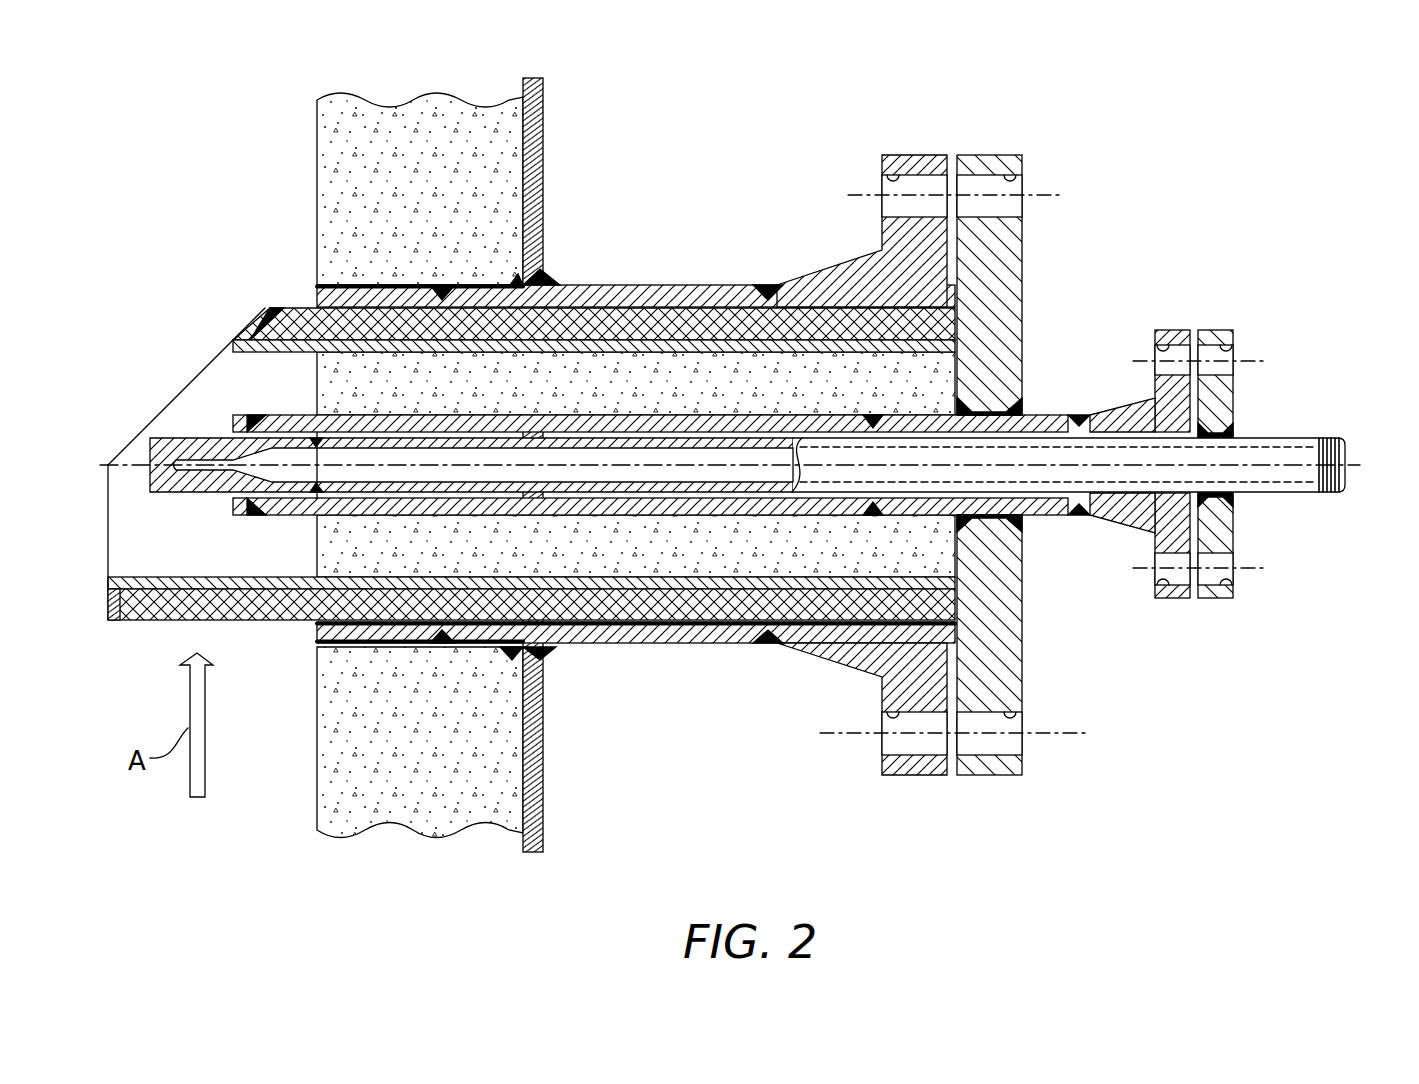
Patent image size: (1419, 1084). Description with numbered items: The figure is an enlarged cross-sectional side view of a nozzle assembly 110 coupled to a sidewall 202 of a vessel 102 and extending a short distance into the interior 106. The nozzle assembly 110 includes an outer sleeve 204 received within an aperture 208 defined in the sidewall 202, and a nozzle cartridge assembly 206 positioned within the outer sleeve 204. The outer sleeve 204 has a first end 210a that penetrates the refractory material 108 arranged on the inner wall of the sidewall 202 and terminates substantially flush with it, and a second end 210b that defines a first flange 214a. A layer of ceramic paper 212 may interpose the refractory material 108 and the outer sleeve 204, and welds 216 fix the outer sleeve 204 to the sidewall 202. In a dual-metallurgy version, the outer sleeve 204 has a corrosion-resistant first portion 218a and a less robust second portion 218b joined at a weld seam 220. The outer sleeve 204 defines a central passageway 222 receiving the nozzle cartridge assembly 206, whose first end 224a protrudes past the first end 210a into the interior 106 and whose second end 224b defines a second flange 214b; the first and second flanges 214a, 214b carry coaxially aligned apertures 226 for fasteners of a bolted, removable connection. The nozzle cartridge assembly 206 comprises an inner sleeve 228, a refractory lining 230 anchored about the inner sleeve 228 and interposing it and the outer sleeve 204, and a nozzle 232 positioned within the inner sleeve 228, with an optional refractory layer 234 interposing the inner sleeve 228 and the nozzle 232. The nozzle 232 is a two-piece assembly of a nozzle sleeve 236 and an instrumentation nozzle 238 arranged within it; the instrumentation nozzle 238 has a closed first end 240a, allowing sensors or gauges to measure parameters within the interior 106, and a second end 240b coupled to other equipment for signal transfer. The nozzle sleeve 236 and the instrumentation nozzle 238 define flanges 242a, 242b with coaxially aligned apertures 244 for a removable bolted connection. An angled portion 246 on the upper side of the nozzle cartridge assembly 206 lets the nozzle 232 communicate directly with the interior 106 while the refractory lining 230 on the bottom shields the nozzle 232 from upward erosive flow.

The vessel 102 is at (548, 103).
The interior 106 is at (204, 181).
The refractory material 108 is at (441, 177).
The nozzle assembly 110 is at (1106, 86).
The sidewall 202 is at (545, 185).
The outer sleeve 204 is at (612, 281).
The nozzle cartridge assembly 206 is at (1034, 313).
The aperture 208 is at (546, 296).
The first end 210a is at (311, 636).
The second end 210b is at (899, 783).
The ceramic paper 212 is at (390, 283).
The first flange 214a is at (893, 155).
The second flange 214b is at (995, 155).
The welds 216 is at (517, 282).
The first portion 218a is at (330, 284).
The second portion 218b is at (670, 288).
The weld seam 220 is at (437, 283).
The central passageway 222 is at (745, 315).
The first end 224a is at (112, 626).
The second end 224b is at (1031, 773).
The apertures 226 is at (890, 180).
The inner sleeve 228 is at (262, 353).
The refractory lining 230 is at (278, 325).
The nozzle 232 is at (221, 427).
The refractory layer 234 is at (588, 392).
The nozzle sleeve 236 is at (403, 421).
The instrumentation nozzle 238 is at (677, 442).
The first end 240a is at (152, 497).
The second end 240b is at (1330, 436).
The flange 242a is at (1165, 330).
The flange 242b is at (1222, 330).
The apertures 244 is at (1160, 350).
The angled portion 246 is at (173, 400).